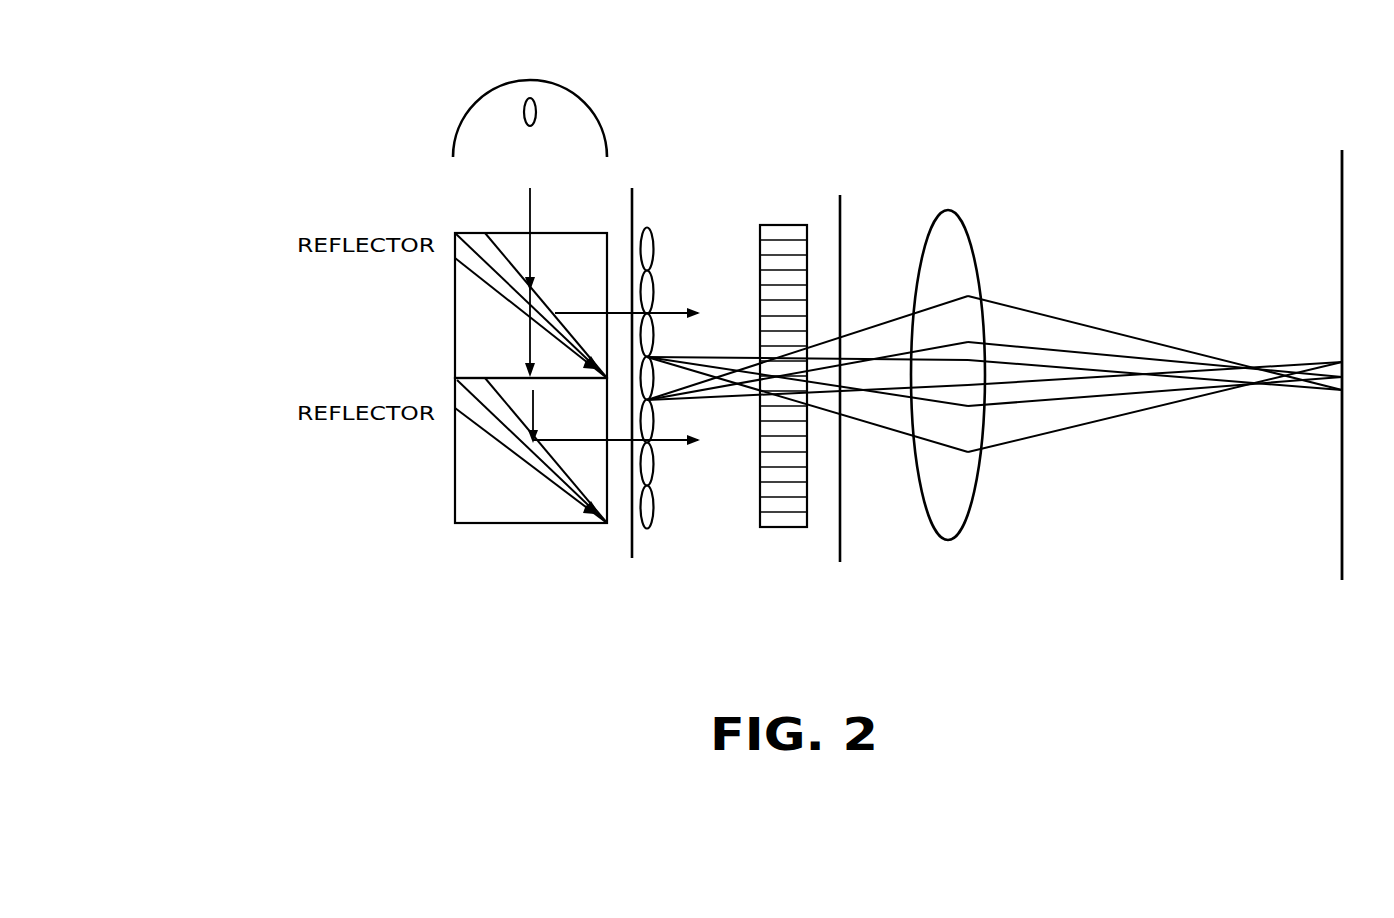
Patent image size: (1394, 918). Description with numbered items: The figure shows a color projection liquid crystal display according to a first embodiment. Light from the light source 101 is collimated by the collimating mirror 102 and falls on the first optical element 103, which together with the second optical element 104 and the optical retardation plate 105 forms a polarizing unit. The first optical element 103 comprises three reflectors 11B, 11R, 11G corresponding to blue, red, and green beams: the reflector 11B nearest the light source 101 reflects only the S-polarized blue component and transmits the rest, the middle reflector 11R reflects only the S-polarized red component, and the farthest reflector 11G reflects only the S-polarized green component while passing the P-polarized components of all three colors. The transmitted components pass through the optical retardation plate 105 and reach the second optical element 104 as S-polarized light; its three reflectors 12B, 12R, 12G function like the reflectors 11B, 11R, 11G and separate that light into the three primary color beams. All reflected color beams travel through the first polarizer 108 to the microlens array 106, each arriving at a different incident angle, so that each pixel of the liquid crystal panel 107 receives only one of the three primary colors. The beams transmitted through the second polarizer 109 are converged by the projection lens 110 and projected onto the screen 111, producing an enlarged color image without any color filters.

The light source 101 is at (522, 108).
The collimating mirror 102 is at (587, 79).
The first optical element 103 is at (472, 233).
The second optical element 104 is at (520, 527).
The optical retardation plate 105 is at (457, 378).
The microlens array 106 is at (650, 226).
The liquid crystal panel 107 is at (780, 527).
The first polarizer 108 is at (633, 548).
The second polarizer 109 is at (841, 552).
The projection lens 110 is at (946, 208).
The screen 111 is at (1340, 248).
The reflector 11B is at (482, 240).
The reflector 11R is at (488, 266).
The reflector 11G is at (504, 297).
The reflector 12B is at (492, 412).
The reflector 12R is at (502, 442).
The reflector 12G is at (530, 462).